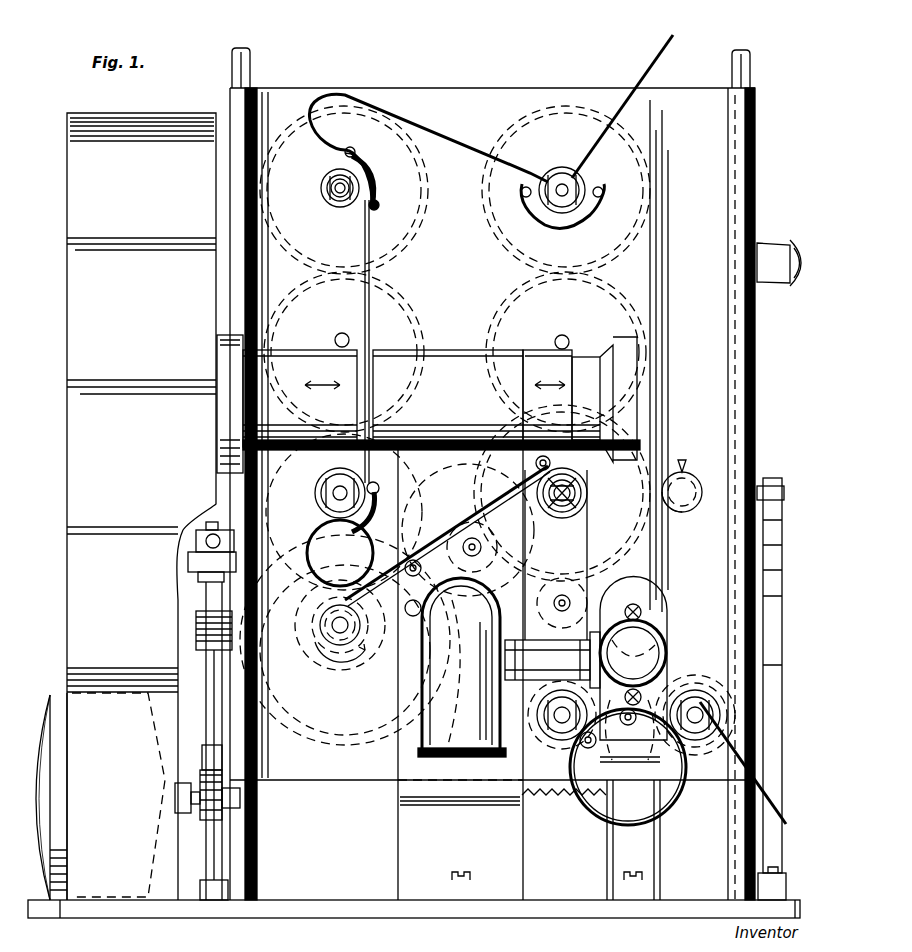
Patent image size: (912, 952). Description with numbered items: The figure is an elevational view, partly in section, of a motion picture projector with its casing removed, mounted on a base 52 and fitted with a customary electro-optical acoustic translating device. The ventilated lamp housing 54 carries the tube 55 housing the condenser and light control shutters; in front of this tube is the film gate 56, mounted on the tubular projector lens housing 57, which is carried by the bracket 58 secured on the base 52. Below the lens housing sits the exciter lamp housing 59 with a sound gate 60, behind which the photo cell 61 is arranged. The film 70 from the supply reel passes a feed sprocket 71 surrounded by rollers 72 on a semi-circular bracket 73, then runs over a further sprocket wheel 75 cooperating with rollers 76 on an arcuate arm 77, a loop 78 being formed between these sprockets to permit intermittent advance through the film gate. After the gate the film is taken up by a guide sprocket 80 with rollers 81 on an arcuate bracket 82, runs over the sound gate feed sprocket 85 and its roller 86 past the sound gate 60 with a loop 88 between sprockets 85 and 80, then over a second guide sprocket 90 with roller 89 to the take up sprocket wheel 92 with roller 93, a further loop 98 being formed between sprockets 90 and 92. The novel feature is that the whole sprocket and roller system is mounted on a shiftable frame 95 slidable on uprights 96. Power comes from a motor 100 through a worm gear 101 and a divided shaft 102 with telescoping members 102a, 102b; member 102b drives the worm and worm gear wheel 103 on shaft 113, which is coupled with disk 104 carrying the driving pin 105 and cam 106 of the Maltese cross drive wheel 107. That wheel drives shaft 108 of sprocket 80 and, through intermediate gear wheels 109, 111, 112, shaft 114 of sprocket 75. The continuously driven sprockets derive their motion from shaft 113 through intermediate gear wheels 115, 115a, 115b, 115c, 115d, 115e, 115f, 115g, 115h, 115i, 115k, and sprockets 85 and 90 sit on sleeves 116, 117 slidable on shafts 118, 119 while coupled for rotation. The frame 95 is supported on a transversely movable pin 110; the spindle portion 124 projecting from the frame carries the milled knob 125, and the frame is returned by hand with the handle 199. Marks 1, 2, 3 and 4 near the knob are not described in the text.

The gear position mark 1 is at (679, 455).
The gear position mark 2 is at (704, 492).
The gear position mark 3 is at (685, 530).
The gear position mark 4 is at (660, 492).
The base 52 is at (342, 918).
The ventilated lamp housing 54 is at (170, 113).
The tube 55 is at (288, 352).
The film gate 56 is at (378, 352).
The tubular projector lens housing 57 is at (544, 350).
The bracket 58 is at (406, 842).
The exciter lamp housing 59 is at (440, 743).
The sound gate 60 is at (604, 600).
The photo cell 61 is at (664, 648).
The film 70 is at (664, 68).
The feed sprocket 71 is at (562, 208).
The rollers 72 is at (604, 190).
The semi-circular bracket 73 is at (586, 224).
The sprocket wheel 75 is at (334, 208).
The rollers 76 is at (378, 208).
The arcuate arm 77 is at (378, 178).
The loop 78 is at (312, 142).
The guide sprocket 80 is at (380, 488).
The rollers 81 is at (382, 498).
The arcuate bracket 82 is at (340, 553).
The sound gate feed sprocket 85 is at (562, 518).
The roller 86 is at (551, 463).
The loop 88 is at (322, 595).
The roller 89 is at (589, 751).
The second guide sprocket 90 is at (552, 740).
The take up sprocket wheel 92 is at (720, 708).
The roller 93 is at (658, 786).
The shiftable frame 95 is at (288, 88).
The uprights 96 is at (251, 66).
The loop 98 is at (626, 828).
The motor 100 is at (60, 696).
The worm gear 101 is at (236, 808).
The divided shaft 102 is at (200, 705).
The telescoping member 102a is at (224, 760).
The telescoping member 102b is at (200, 640).
The worm and worm gear wheel 103 is at (205, 595).
The disk 104 is at (310, 700).
The driving pin 105 is at (345, 650).
The cam 106 is at (461, 665).
The Maltese cross drive wheel 107 is at (344, 512).
The shaft 108 is at (348, 480).
The intermediate gear wheel 109 is at (424, 492).
The pin 110 is at (776, 482).
The intermediate gear wheel 111 is at (405, 310).
The intermediate gear wheel 112 is at (418, 236).
The shaft 113 is at (330, 630).
The shaft 114 is at (330, 189).
The intermediate gear wheel 115 is at (356, 625).
The intermediate gear wheel 115a is at (352, 590).
The intermediate gear wheel 115b is at (526, 556).
The intermediate gear wheel 115c is at (632, 548).
The intermediate gear wheel 115d is at (640, 330).
The intermediate gear wheel 115e is at (655, 224).
The intermediate gear wheel 115f is at (486, 553).
The intermediate gear wheel 115g is at (555, 800).
The intermediate gear wheel 115h is at (515, 790).
The intermediate gear wheel 115i is at (695, 704).
The intermediate gear wheel 115k is at (737, 715).
The sleeve 116 is at (586, 490).
The sleeve 117 is at (630, 731).
The shaft 118 is at (552, 512).
The shaft 119 is at (552, 660).
The portion of spindle 124 is at (690, 480).
The milled knob 125 is at (692, 512).
The handle 199 is at (797, 288).